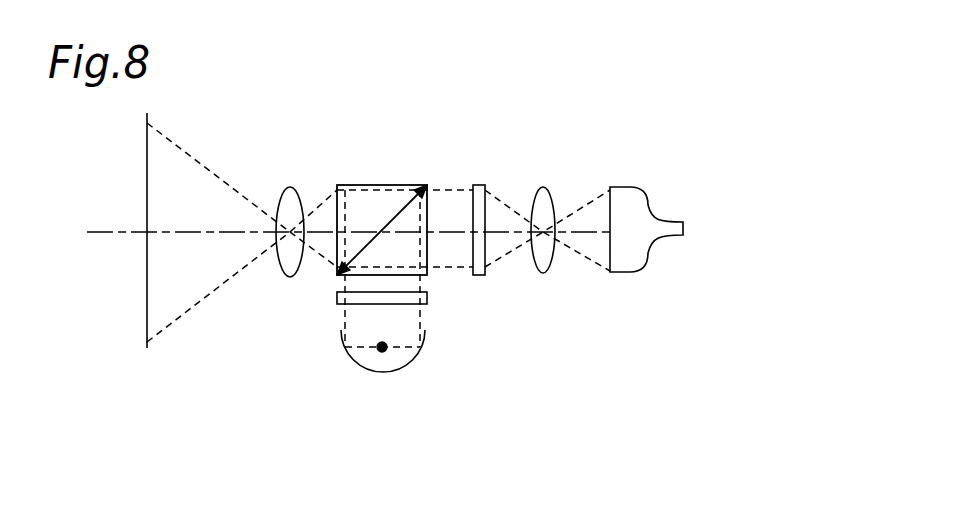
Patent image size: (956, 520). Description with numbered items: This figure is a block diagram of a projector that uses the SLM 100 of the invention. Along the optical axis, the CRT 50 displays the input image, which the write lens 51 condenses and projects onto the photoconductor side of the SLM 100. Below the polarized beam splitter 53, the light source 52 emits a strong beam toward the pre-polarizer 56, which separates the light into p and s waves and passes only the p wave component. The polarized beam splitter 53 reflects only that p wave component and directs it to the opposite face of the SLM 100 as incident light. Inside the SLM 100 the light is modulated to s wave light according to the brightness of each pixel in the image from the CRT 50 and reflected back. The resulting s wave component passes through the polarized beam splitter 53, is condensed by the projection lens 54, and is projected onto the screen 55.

The SLM 100 is at (479, 185).
The polarized beam splitter 53 is at (361, 185).
The write lens 51 is at (545, 187).
The CRT 50 is at (624, 273).
The pre-polarizer 56 is at (427, 296).
The light source 52 is at (417, 358).
The projection lens 54 is at (288, 277).
The screen 55 is at (117, 252).